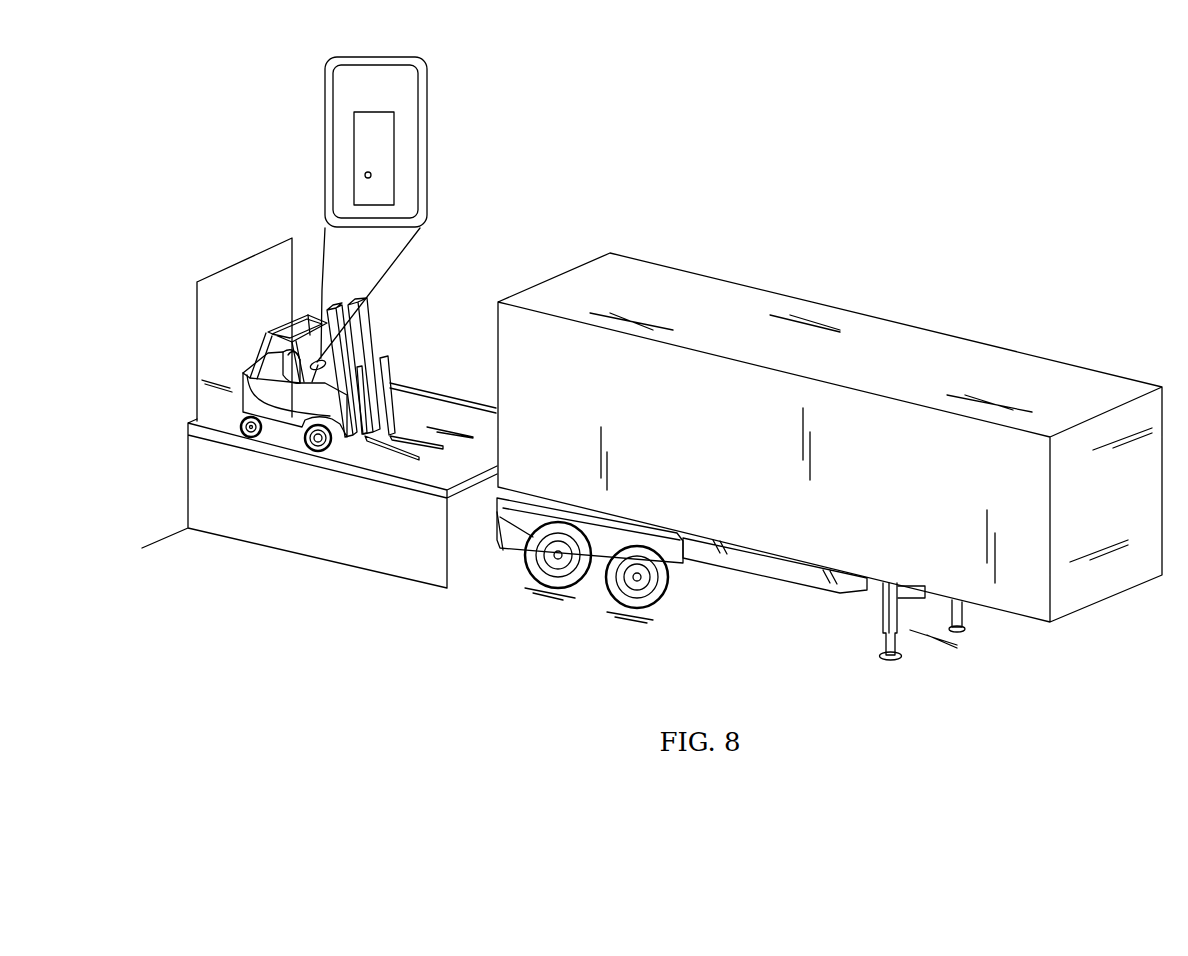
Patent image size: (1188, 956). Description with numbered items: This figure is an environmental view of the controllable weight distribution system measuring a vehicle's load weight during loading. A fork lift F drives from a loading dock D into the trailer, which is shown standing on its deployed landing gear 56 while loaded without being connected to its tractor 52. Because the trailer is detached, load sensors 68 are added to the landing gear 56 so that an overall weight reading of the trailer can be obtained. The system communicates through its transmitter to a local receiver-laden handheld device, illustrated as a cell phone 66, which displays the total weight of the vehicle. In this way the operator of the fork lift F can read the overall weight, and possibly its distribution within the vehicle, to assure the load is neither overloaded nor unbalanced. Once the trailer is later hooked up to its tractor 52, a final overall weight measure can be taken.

The cell phone 66 is at (421, 87).
The tractor 52 is at (923, 327).
The load sensors 68 is at (884, 627).
The landing gear 56 is at (901, 647).
The fork lift F is at (293, 427).
The loading dock D is at (435, 468).